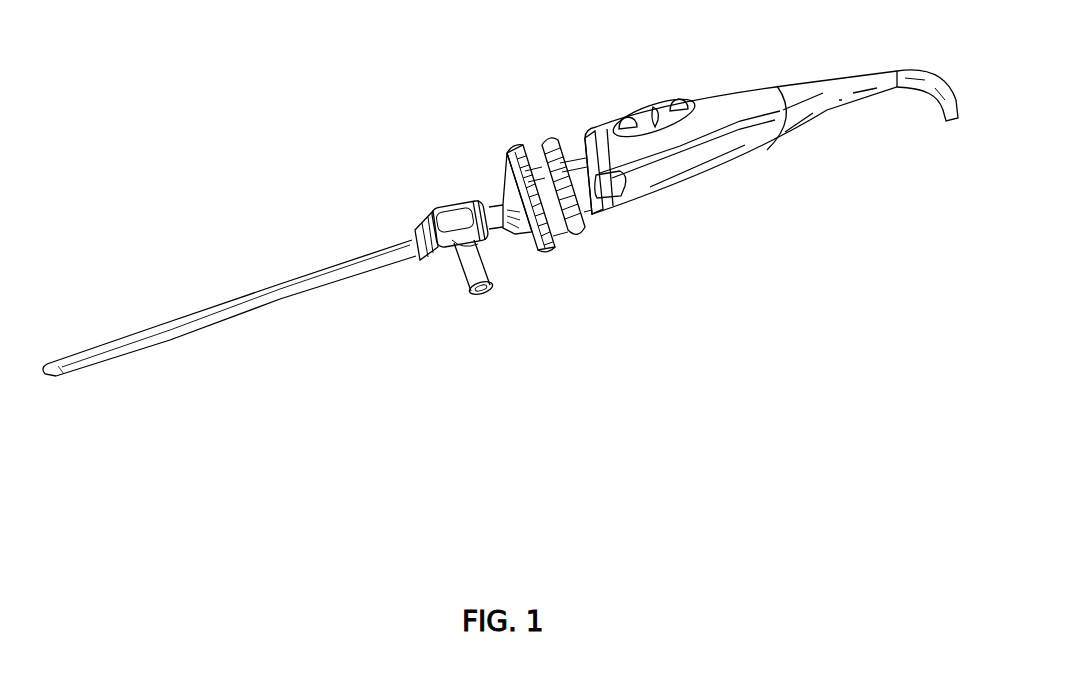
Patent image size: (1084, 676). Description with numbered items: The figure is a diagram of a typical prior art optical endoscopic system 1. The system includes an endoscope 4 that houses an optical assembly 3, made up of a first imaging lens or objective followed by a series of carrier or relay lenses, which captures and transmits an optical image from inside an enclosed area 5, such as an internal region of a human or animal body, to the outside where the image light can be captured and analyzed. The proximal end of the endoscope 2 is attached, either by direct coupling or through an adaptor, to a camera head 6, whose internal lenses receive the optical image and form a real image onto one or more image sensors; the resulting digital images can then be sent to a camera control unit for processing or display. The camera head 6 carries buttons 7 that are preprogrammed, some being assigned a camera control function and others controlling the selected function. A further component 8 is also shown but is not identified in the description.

The optical endoscopic system 1 is at (434, 89).
The proximal end of the endoscope 2 is at (508, 240).
The optical assembly 3 is at (350, 262).
The endoscope 4 is at (305, 300).
The enclosed area 5 is at (80, 429).
The camera head 6 is at (672, 195).
The buttons 7 is at (675, 102).
The side port 8 is at (486, 296).